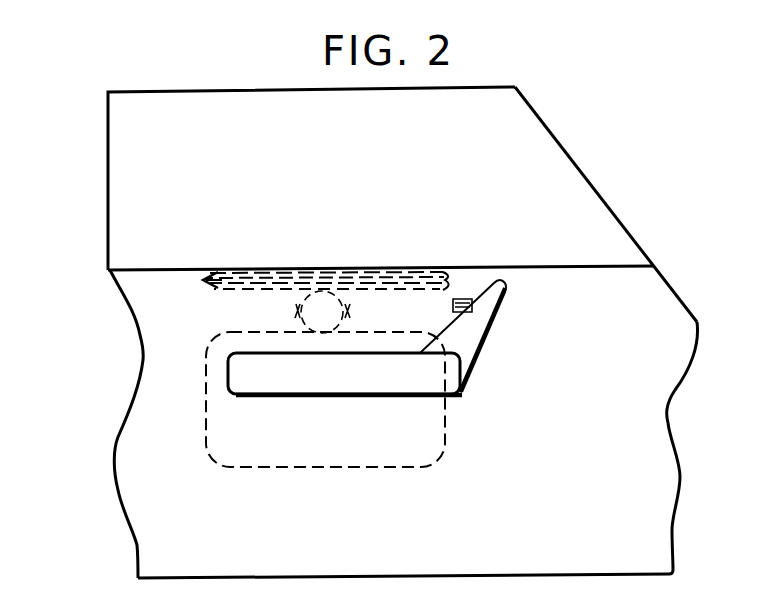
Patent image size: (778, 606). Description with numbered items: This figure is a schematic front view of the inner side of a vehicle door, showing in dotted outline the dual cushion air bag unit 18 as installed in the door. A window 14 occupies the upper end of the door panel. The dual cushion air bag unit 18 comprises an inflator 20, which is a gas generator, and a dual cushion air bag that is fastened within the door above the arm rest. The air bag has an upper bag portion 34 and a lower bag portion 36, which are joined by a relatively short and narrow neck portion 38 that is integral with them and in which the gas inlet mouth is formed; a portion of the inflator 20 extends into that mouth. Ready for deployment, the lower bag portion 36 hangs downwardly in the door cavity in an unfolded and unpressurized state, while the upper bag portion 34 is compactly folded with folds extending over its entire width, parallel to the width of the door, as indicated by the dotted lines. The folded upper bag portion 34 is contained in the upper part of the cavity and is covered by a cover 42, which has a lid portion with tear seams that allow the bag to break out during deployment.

The window 14 is at (118, 144).
The dual cushion air bag unit 18 is at (197, 382).
The inflator 20 is at (352, 310).
The upper bag portion 34 is at (205, 279).
The lower bag portion 36 is at (212, 457).
The neck portion 38 is at (293, 309).
The cover 42 is at (329, 267).